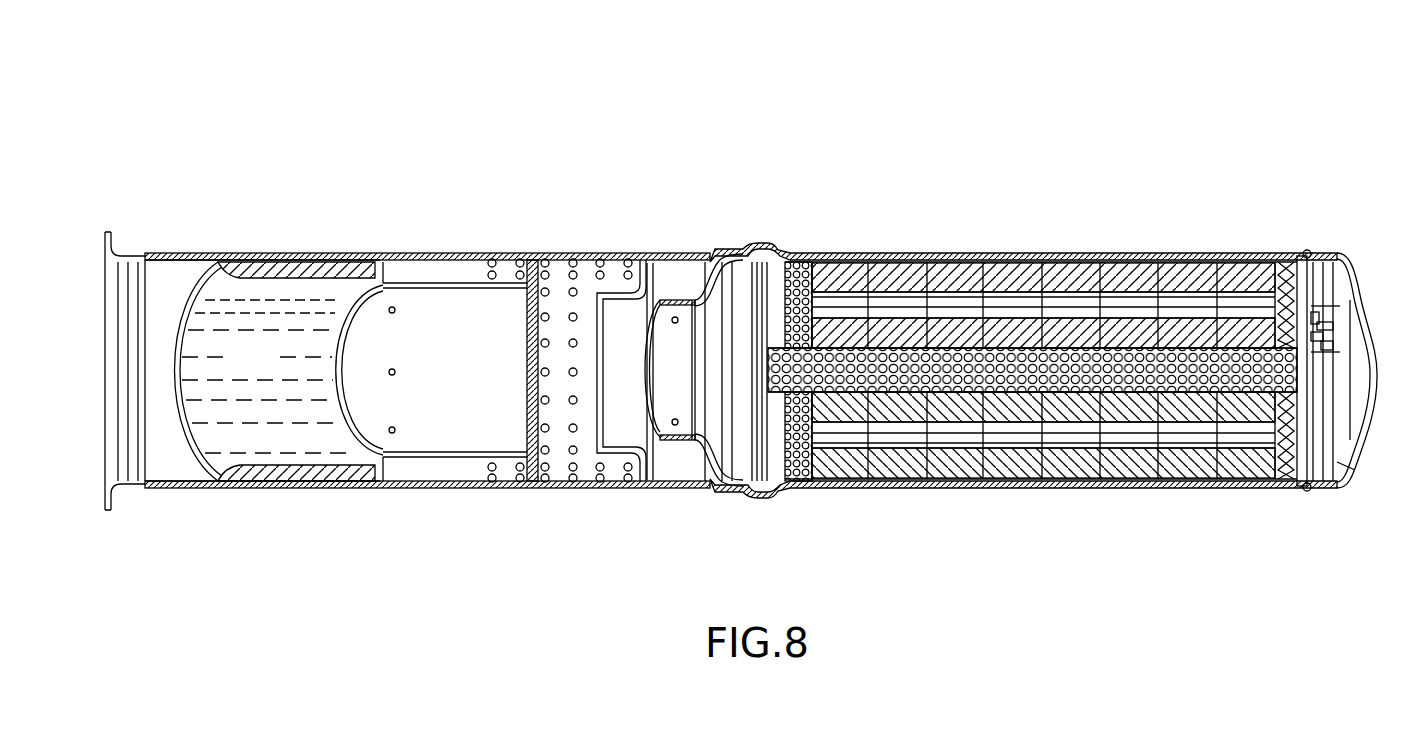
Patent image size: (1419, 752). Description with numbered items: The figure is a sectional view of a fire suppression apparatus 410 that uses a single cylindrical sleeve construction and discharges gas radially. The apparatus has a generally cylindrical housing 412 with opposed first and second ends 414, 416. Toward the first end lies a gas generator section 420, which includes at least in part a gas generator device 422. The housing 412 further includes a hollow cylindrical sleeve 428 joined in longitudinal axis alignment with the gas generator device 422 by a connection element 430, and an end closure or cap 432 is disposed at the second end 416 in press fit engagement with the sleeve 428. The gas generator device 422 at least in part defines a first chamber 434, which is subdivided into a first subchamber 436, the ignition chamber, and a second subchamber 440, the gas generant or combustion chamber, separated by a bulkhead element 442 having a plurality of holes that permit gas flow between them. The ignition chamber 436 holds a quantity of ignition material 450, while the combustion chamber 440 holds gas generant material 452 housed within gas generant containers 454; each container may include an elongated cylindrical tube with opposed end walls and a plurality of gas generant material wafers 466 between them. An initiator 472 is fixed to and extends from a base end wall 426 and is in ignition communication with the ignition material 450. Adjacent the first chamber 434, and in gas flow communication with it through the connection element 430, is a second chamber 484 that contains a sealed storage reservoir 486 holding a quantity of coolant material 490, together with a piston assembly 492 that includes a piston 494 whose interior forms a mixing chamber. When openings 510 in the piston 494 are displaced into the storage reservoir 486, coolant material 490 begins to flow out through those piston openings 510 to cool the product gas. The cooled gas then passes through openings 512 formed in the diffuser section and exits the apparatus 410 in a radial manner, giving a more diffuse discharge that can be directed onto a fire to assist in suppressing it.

The fire suppression apparatus 410 is at (875, 146).
The housing 412 is at (464, 240).
The first end 414 is at (1356, 235).
The second end 416 is at (165, 228).
The gas generator section 420 is at (1078, 240).
The gas generator device 422 is at (903, 500).
The base end wall 426 is at (1356, 488).
The hollow cylindrical sleeve 428 is at (394, 253).
The connection element 430 is at (700, 470).
The end closure or cap 432 is at (118, 494).
The first chamber 434 is at (1118, 354).
The first subchamber 436 is at (1297, 490).
The second subchamber 440 is at (995, 382).
The bulkhead element 442 is at (1278, 490).
The ignition material 450 is at (1292, 262).
The gas generant material 452 is at (1075, 455).
The gas generant containers 454 is at (805, 500).
The gas generant material wafers 466 is at (1131, 462).
The initiator 472 is at (1321, 318).
The second chamber 484 is at (306, 498).
The sealed storage reservoir 486 is at (266, 488).
The coolant material 490 is at (276, 371).
The piston assembly 492 is at (378, 497).
The piston 494 is at (452, 437).
The openings 510 is at (389, 371).
The openings 512 is at (602, 253).